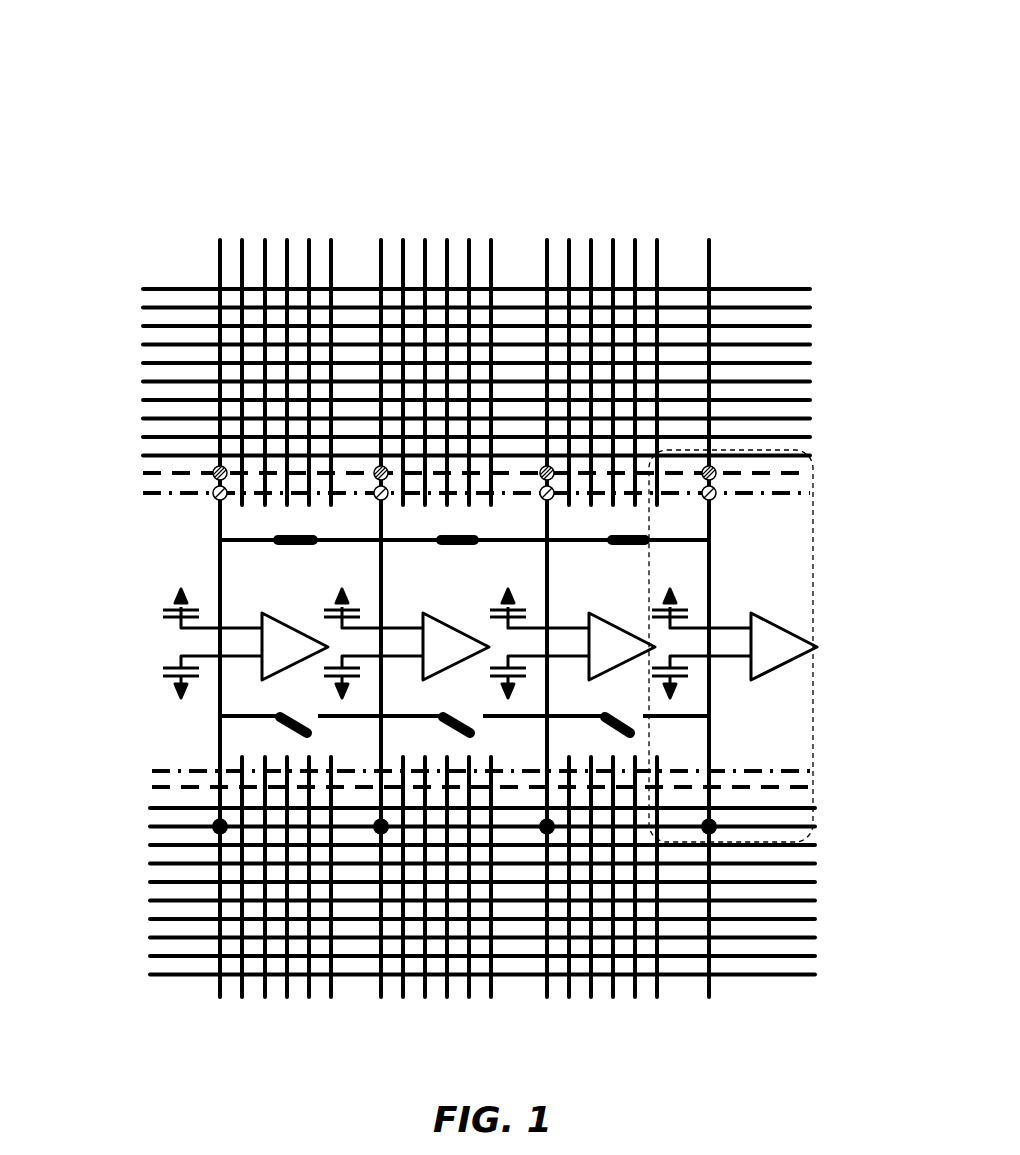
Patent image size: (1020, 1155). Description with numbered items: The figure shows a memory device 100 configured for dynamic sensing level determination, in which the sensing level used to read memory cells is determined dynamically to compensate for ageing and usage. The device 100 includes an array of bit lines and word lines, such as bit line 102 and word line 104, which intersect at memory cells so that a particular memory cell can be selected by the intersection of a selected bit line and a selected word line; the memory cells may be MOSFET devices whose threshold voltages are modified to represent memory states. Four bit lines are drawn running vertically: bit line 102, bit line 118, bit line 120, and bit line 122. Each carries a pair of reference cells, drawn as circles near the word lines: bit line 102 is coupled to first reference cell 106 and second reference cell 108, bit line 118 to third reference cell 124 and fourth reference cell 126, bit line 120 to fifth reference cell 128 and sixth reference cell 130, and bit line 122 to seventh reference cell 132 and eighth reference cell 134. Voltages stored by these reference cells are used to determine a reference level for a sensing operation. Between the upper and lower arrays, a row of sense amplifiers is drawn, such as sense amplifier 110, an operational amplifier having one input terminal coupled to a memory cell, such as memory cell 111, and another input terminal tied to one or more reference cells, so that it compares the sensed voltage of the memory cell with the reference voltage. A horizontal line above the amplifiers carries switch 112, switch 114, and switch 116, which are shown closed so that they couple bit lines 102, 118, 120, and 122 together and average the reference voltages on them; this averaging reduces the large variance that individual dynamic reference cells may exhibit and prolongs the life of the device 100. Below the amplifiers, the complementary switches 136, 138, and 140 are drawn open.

The device 100 is at (822, 38).
The bit line 102 is at (218, 268).
The word line 104 is at (180, 470).
The first reference cell 106 is at (214, 467).
The second reference cell 108 is at (213, 488).
The sense amplifier 110 is at (262, 615).
The memory cell 111 is at (214, 822).
The switch 112 is at (273, 540).
The switch 114 is at (478, 540).
The switch 116 is at (650, 541).
The bit line 118 is at (380, 242).
The bit line 120 is at (548, 242).
The bit line 122 is at (710, 242).
The third reference cell 124 is at (383, 468).
The fourth reference cell 126 is at (385, 488).
The fifth reference cell 128 is at (549, 468).
The sixth reference cell 130 is at (551, 488).
The seventh reference cell 132 is at (711, 468).
The eighth reference cell 134 is at (712, 488).
The switch 136 is at (278, 716).
The switch 138 is at (483, 715).
The switch 140 is at (634, 734).